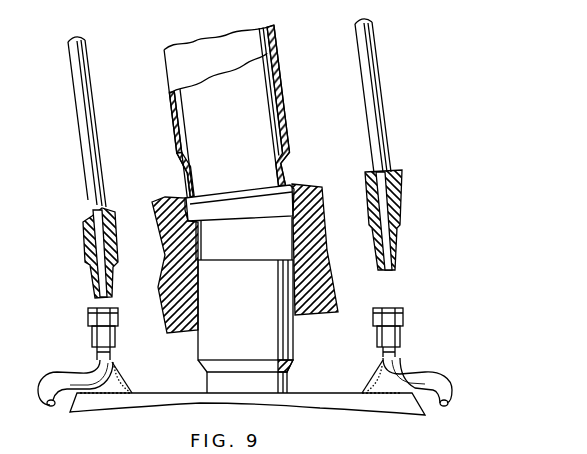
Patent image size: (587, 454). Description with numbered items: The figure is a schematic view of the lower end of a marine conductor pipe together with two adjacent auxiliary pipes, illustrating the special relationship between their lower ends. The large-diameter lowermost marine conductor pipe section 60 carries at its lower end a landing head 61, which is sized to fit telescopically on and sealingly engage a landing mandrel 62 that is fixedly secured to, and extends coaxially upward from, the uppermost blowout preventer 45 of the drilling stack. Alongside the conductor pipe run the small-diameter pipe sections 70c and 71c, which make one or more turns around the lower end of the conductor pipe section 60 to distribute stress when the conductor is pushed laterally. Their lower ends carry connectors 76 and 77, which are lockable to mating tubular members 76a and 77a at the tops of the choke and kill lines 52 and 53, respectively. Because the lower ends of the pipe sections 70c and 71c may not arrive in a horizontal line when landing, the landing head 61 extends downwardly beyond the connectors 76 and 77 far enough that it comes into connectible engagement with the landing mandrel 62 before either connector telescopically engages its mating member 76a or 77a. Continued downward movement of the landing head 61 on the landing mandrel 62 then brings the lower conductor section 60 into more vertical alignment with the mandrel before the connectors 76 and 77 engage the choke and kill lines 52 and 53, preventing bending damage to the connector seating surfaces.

The uppermost blowout preventer 45 is at (140, 400).
The choke line 52 is at (48, 383).
The kill line 53 is at (445, 380).
The marine conductor pipe section 60 is at (277, 73).
The landing head 61 is at (251, 245).
The landing mandrel 62 is at (255, 322).
The small-diameter pipe section 70c is at (90, 152).
The small-diameter pipe section 71c is at (372, 92).
The connector 76 is at (84, 226).
The mating tubular member 76a is at (90, 321).
The connector 77 is at (395, 187).
The mating tubular member 77a is at (405, 320).